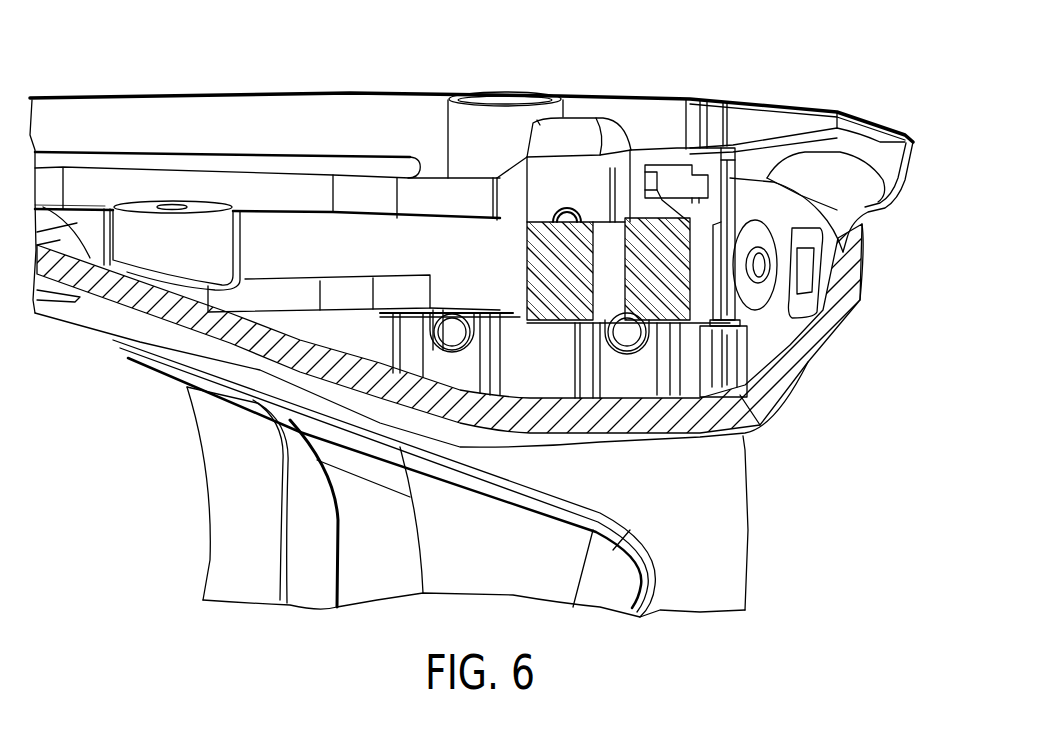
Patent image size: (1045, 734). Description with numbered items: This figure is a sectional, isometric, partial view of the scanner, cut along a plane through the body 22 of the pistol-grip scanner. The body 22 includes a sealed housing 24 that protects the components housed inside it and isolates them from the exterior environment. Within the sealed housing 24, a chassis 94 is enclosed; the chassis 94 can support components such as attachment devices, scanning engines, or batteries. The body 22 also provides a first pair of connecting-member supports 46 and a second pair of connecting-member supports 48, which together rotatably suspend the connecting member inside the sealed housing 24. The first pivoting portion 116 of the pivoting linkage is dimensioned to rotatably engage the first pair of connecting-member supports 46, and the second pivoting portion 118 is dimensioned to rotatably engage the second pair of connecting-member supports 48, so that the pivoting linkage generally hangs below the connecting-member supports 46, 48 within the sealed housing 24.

The body 22 is at (867, 109).
The sealed housing 24 is at (750, 566).
The first pair of connecting-member supports 46 is at (468, 373).
The second pair of connecting-member supports 48 is at (632, 387).
The chassis 94 is at (275, 228).
The first pivoting portion 116 is at (448, 340).
The second pivoting portion 118 is at (633, 330).